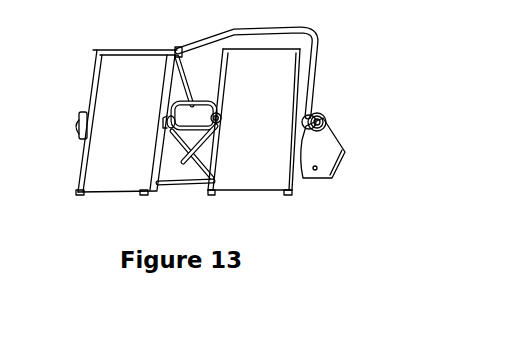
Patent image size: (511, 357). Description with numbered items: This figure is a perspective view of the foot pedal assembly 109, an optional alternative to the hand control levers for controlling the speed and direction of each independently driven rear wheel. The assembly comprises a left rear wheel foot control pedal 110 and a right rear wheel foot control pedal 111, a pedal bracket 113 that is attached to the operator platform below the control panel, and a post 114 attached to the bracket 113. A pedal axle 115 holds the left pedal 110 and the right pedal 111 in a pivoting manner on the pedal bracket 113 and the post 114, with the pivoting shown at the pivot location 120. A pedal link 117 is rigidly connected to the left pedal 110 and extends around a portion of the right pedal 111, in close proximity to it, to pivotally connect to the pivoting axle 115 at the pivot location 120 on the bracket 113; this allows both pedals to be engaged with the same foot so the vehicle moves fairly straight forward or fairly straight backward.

The foot pedal assembly 109 is at (343, 127).
The left rear wheel foot control pedal 110 is at (115, 148).
The right rear wheel foot control pedal 111 is at (249, 143).
The pedal bracket 113 is at (332, 138).
The post 114 is at (177, 52).
The pedal axle 115 is at (217, 113).
The pedal link 117 is at (320, 40).
The pivot location 120 is at (85, 115).